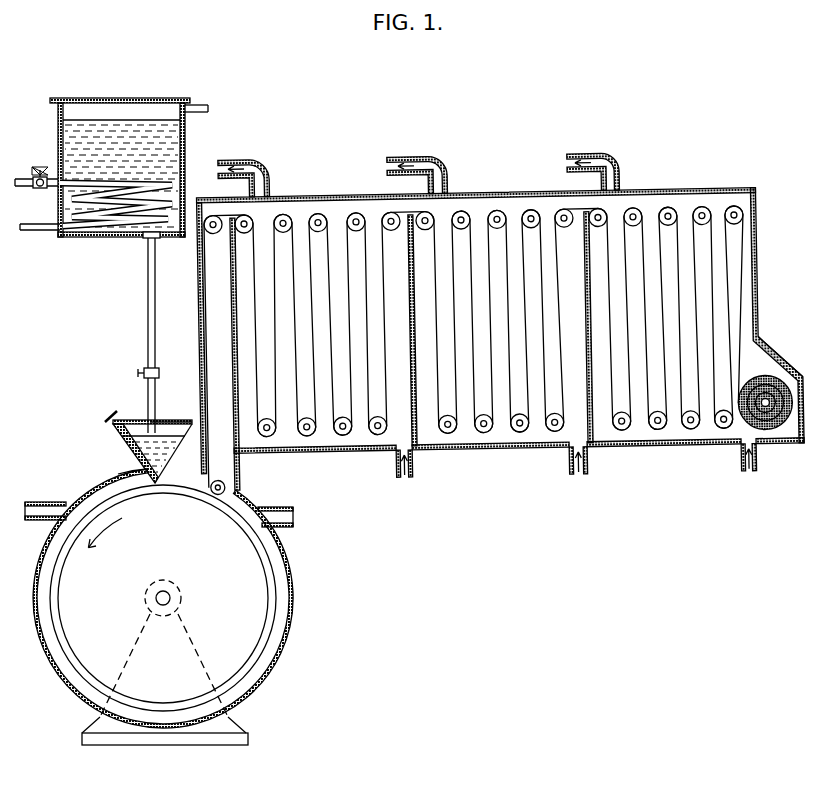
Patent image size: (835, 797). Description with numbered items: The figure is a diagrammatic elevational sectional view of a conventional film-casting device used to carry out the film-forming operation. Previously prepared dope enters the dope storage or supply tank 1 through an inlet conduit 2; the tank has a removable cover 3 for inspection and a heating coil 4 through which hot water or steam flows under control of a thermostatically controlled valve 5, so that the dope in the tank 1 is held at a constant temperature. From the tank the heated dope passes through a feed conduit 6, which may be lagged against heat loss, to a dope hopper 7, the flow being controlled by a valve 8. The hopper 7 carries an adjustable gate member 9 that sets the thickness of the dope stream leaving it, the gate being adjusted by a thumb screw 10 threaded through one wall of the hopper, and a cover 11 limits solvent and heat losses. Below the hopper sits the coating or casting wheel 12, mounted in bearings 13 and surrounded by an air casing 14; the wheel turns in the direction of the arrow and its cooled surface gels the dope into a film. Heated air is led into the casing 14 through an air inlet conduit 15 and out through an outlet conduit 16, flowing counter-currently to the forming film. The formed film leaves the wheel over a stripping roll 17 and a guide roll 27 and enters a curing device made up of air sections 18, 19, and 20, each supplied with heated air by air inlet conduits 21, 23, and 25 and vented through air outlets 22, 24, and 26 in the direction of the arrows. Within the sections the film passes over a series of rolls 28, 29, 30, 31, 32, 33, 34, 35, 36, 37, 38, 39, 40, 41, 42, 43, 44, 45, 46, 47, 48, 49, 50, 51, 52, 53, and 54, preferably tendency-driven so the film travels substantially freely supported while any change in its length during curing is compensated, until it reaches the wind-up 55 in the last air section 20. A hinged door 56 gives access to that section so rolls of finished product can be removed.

The dope storage or supply tank 1 is at (60, 122).
The inlet conduit 2 is at (200, 106).
The removable cover 3 is at (68, 98).
The heating coil 4 is at (93, 228).
The thermostatically controlled valve 5 is at (38, 187).
The feed conduit 6 is at (148, 311).
The dope hopper 7 is at (115, 431).
The valve 8 is at (145, 371).
The adjustable gate member 9 is at (125, 476).
The thumb screw 10 is at (110, 414).
The cover 11 is at (180, 420).
The coating or casting wheel 12 is at (76, 684).
The bearings 13 is at (180, 594).
The air casing 14 is at (291, 578).
The air inlet conduit 15 is at (286, 527).
The outlet conduit 16 is at (62, 503).
The stripping roll 17 is at (222, 489).
The air section 18 is at (300, 198).
The air section 19 is at (470, 198).
The air section 20 is at (655, 198).
The air inlet conduit 21 is at (400, 482).
The air outlet 22 is at (264, 162).
The air inlet conduit 23 is at (572, 482).
The air outlet 24 is at (440, 161).
The air inlet conduit 25 is at (741, 482).
The air outlet 26 is at (610, 161).
The guide roll 27 is at (206, 231).
The roll 28 is at (244, 215).
The roll 29 is at (263, 437).
The roll 30 is at (283, 215).
The roll 31 is at (303, 437).
The roll 32 is at (318, 215).
The roll 33 is at (339, 437).
The roll 34 is at (356, 215).
The roll 35 is at (374, 437).
The roll 36 is at (391, 215).
The roll 37 is at (425, 215).
The roll 38 is at (444, 437).
The roll 39 is at (461, 215).
The roll 40 is at (480, 437).
The roll 41 is at (497, 215).
The roll 42 is at (516, 437).
The roll 43 is at (531, 215).
The roll 44 is at (551, 437).
The roll 45 is at (564, 215).
The roll 46 is at (598, 215).
The roll 47 is at (618, 437).
The roll 48 is at (633, 215).
The roll 49 is at (654, 437).
The roll 50 is at (668, 215).
The roll 51 is at (687, 437).
The roll 52 is at (702, 215).
The roll 53 is at (720, 437).
The roll 54 is at (734, 215).
The wind-up 55 is at (775, 432).
The hinged door 56 is at (768, 360).